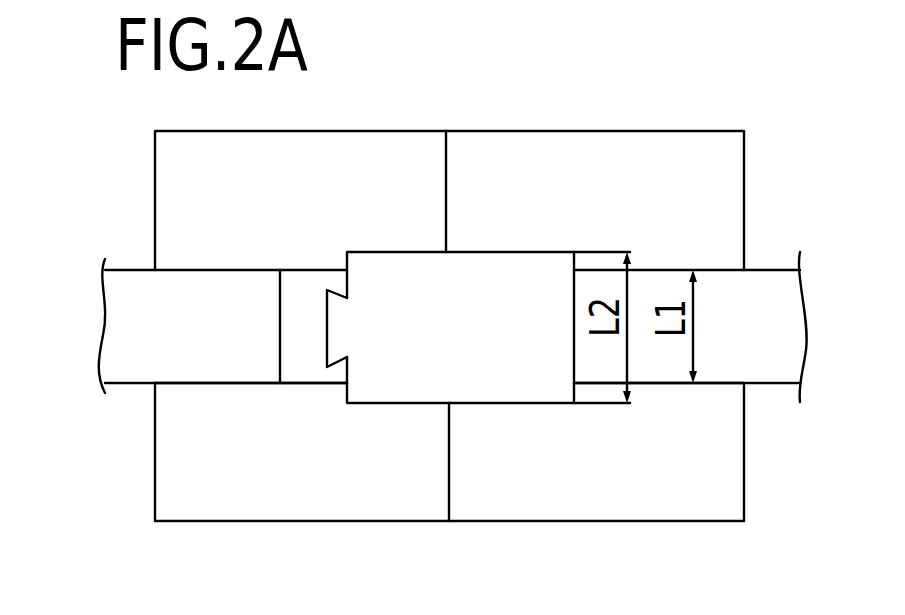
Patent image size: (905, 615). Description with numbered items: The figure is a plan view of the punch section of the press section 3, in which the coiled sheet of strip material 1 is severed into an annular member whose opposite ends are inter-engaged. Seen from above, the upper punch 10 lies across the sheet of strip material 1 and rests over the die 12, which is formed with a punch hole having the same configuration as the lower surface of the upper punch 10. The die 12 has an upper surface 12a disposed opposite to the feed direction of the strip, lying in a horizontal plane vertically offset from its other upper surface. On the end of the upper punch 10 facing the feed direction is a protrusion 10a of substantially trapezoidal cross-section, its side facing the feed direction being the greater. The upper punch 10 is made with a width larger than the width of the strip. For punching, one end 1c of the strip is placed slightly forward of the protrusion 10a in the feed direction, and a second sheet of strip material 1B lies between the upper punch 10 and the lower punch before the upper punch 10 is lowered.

The sheet of strip material 1 is at (127, 383).
The sheet of strip material 1B is at (770, 290).
The one end of the sheet of strip material 1c is at (277, 307).
The press section 3 is at (151, 523).
The upper punch 10 is at (520, 386).
The protrusion 10a is at (337, 313).
The die 12 is at (230, 521).
The upper surface of the die 12a is at (667, 495).